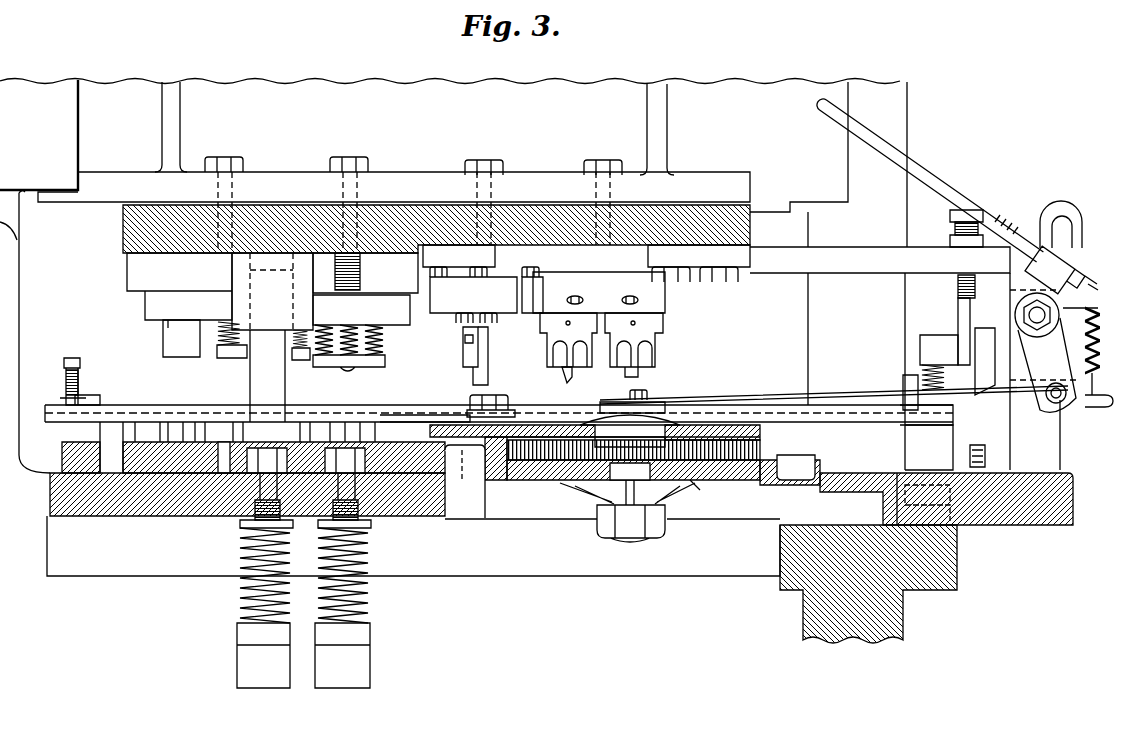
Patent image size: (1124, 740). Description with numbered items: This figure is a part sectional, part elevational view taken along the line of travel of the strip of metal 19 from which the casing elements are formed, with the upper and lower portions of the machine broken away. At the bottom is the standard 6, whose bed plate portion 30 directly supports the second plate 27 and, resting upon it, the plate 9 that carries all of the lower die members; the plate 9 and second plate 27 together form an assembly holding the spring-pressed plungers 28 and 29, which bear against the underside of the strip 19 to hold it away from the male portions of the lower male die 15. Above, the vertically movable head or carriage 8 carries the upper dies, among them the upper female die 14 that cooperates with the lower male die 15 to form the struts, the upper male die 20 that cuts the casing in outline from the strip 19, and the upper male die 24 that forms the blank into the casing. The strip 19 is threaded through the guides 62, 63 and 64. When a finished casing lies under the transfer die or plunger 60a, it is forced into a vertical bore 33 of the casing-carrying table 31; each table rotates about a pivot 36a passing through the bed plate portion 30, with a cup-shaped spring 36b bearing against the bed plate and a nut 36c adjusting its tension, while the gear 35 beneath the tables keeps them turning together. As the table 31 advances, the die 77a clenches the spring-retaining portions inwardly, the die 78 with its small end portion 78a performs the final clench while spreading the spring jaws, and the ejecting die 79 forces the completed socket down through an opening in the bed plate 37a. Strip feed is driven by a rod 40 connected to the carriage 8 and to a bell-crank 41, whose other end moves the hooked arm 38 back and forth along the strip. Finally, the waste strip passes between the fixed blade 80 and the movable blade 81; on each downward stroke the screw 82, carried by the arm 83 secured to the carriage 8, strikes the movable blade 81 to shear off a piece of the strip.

The head or carriage 8 is at (745, 92).
The rod 40 is at (952, 170).
The arm 83 is at (922, 253).
The screw 82 is at (958, 296).
The movable blade 81 is at (985, 328).
The upper female die 14 is at (173, 348).
The guide 62 is at (112, 420).
The lower male die 15 is at (178, 420).
The upper male die 20 is at (230, 352).
The strip of metal 19 is at (203, 421).
The spring-pressed plunger 28 is at (240, 421).
The spring-pressed plunger 29 is at (298, 420).
The upper male die 24 is at (350, 372).
The transfer die or plunger 60a is at (463, 352).
The guide 63 is at (428, 418).
The ejecting die 79 is at (490, 378).
The die 78 is at (548, 350).
The small end portion 78a is at (566, 383).
The die 77a is at (667, 352).
The gear 35 is at (692, 405).
The arm 38 is at (770, 398).
The casing-carrying table 31 is at (823, 420).
The bell-crank 41 is at (1043, 400).
The guide 64 is at (895, 430).
The fixed blade 80 is at (962, 448).
The second plate 27 is at (140, 478).
The plate 9 is at (185, 447).
The bed plate 37a is at (463, 480).
The pivot 36a is at (597, 475).
The cup-shaped spring 36b is at (690, 485).
The nut 36c is at (612, 537).
The vertical bores 33 is at (796, 470).
The bed plate portion 30 is at (1020, 523).
The standard 6 is at (805, 615).